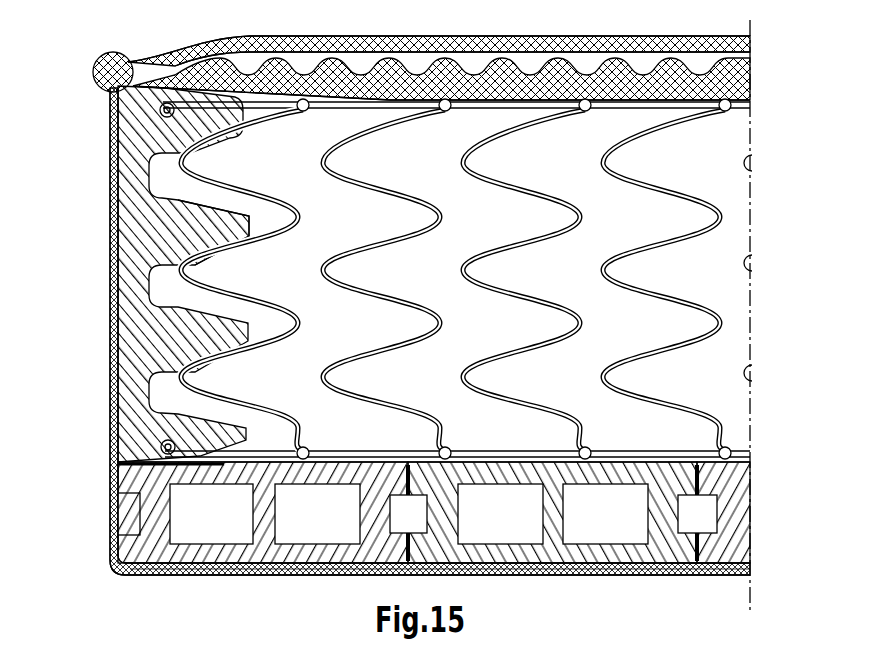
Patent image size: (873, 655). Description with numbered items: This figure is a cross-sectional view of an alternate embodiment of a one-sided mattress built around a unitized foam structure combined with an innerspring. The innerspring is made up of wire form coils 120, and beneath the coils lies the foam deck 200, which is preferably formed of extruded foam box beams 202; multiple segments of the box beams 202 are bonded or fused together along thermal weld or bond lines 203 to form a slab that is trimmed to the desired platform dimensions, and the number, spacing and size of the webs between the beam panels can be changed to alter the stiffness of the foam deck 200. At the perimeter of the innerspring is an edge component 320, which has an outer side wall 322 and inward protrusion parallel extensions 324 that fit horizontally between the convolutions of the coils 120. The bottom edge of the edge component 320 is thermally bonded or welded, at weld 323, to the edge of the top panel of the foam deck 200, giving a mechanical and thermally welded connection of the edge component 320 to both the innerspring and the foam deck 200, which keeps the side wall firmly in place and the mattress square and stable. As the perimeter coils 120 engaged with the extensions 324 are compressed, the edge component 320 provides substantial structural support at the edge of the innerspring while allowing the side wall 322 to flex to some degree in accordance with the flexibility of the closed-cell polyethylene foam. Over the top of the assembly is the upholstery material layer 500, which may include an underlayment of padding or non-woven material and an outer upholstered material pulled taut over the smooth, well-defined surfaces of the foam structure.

The upholstery material layer 500 is at (722, 46).
The wire form coils 120 is at (695, 262).
The outer side wall 322 is at (110, 225).
The edge component 320 is at (117, 325).
The inward protrusion parallel extensions 324 is at (246, 201).
The weld 323 is at (110, 476).
The foam deck 200 is at (310, 573).
The foam box beams 202 is at (575, 556).
The thermal weld or bond lines 203 is at (455, 572).